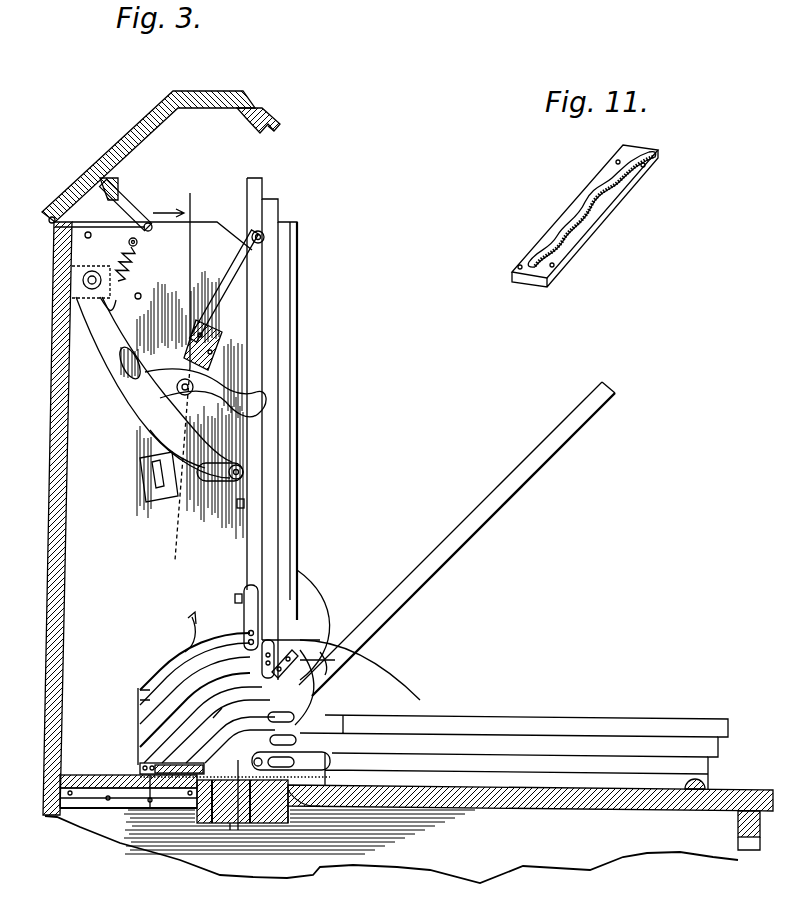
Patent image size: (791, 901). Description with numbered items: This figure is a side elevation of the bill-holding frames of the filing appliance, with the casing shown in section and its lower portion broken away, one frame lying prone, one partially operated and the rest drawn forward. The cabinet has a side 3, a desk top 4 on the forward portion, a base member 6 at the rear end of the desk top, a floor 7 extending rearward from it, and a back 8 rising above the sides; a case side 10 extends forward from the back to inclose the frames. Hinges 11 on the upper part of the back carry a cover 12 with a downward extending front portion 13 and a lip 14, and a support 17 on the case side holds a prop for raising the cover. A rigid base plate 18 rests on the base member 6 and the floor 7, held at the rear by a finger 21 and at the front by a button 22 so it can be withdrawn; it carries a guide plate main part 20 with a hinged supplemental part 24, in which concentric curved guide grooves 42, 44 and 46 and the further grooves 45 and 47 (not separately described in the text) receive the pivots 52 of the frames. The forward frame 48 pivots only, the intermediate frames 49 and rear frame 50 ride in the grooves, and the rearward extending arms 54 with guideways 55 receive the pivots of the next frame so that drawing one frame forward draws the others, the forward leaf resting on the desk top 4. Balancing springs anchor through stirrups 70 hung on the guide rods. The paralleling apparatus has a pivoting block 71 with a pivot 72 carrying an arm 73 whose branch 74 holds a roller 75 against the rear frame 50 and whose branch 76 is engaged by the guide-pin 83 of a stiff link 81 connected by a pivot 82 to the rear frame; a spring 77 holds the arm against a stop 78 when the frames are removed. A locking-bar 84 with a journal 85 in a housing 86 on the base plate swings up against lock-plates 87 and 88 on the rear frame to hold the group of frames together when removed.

The side 3 is at (442, 834).
The desk top 4 is at (551, 804).
The base member 6 is at (160, 858).
The floor 7 is at (92, 780).
The back 8 is at (48, 508).
The case side 10 is at (180, 368).
The hinge 11 is at (50, 223).
The cover 12 is at (110, 149).
The front portion 13 is at (246, 120).
The lip 14 is at (278, 124).
The support 17 is at (88, 232).
The base plate 18 is at (135, 790).
The guide plate main part 20 is at (157, 680).
The finger 21 is at (122, 788).
The button 22 is at (290, 822).
The supplemental guide plate part 24 is at (330, 648).
The slide rail 42 is at (225, 745).
The slide guide 44 is at (236, 640).
The link 45 is at (335, 660).
The slide member 46 is at (190, 745).
The latch 47 is at (300, 698).
The forward frame 48 is at (707, 776).
The intermediate frame 49 is at (512, 490).
The rear frame 50 is at (255, 182).
The pivot 52 is at (330, 642).
The rearward extending arm 54 is at (326, 612).
The guide-way 55 is at (290, 744).
The stirrup 70 is at (220, 710).
The pivoting block 71 is at (88, 268).
The pivot 72 is at (114, 300).
The arm 73 is at (117, 368).
The branch 74 is at (150, 430).
The roller 75 is at (244, 470).
The branch 76 is at (255, 392).
The spring 77 is at (135, 259).
The stop 78 is at (141, 295).
The stiff link 81 is at (140, 478).
The pivot 82 is at (265, 236).
The guide-pin 83 is at (177, 390).
The locking-bar 84 is at (140, 768).
The journal 85 is at (177, 790).
The housing 86 is at (160, 767).
The lock-plate 87 is at (245, 598).
The lock-plate 88 is at (245, 503).